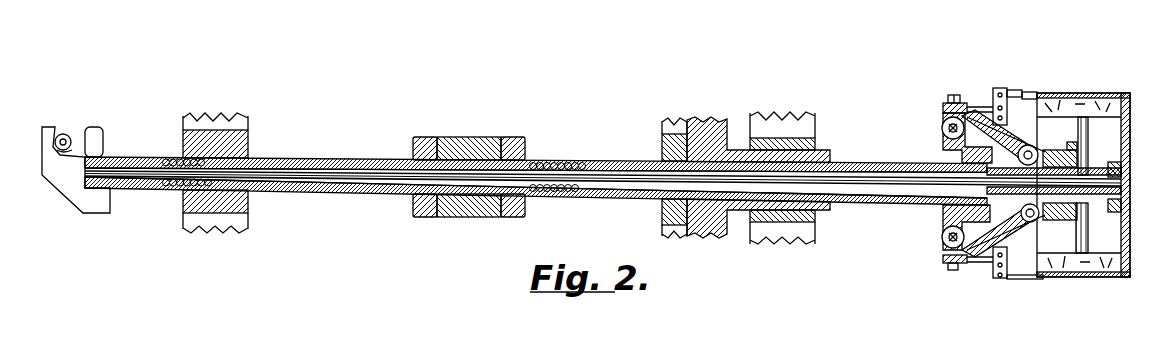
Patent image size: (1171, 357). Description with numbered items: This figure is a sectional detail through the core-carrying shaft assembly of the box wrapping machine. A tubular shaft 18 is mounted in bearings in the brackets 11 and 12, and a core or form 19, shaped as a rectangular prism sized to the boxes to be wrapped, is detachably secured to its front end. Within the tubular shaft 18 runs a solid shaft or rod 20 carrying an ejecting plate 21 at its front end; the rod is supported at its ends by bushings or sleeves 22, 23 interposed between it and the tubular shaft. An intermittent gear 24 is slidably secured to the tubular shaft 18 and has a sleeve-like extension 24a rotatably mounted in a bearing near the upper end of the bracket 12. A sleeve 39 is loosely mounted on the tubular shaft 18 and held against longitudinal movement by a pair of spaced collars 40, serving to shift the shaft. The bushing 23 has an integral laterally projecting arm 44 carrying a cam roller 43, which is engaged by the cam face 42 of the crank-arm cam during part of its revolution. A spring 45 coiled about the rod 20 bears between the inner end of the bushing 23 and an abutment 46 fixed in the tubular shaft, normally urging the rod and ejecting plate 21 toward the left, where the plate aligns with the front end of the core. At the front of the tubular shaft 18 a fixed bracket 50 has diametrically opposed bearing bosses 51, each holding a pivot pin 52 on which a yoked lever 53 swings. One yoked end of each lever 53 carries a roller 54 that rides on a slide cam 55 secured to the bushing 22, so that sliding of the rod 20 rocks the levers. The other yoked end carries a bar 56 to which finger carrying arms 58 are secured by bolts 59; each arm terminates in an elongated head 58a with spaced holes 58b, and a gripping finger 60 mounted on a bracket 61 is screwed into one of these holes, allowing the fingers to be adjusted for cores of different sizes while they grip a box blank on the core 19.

The bracket 11 is at (243, 223).
The bracket 12 is at (815, 238).
The tubular shaft 18 is at (312, 158).
The core or form 19 is at (1107, 98).
The solid shaft or rod 20 is at (630, 183).
The ejecting plate 21 is at (1128, 155).
The bushing or sleeve 22 is at (1130, 205).
The bushing or sleeve 23 is at (155, 190).
The intermittent gear 24 is at (700, 120).
The sleeve-like extension 24a is at (830, 143).
The sleeve 39 is at (456, 137).
The spaced collars 40 is at (416, 137).
The cam face 42 is at (113, 203).
The cam roller 43 is at (63, 128).
The laterally projecting arm 44 is at (100, 133).
The spring 45 is at (558, 198).
The abutment 46 is at (583, 162).
The bracket 50 is at (962, 152).
The bearing boss 51 is at (943, 116).
The pivot pin 52 is at (950, 128).
The lever 53 is at (990, 138).
The roller 54 is at (1034, 152).
The slide cam 55 is at (1088, 138).
The bar 56 is at (950, 257).
The finger carrying arm 58 is at (963, 105).
The elongated head 58a is at (1000, 90).
The spaced holes 58b is at (1010, 95).
The bolt 59 is at (952, 94).
The gripping finger 60 is at (1033, 280).
The bracket 61 is at (1008, 280).